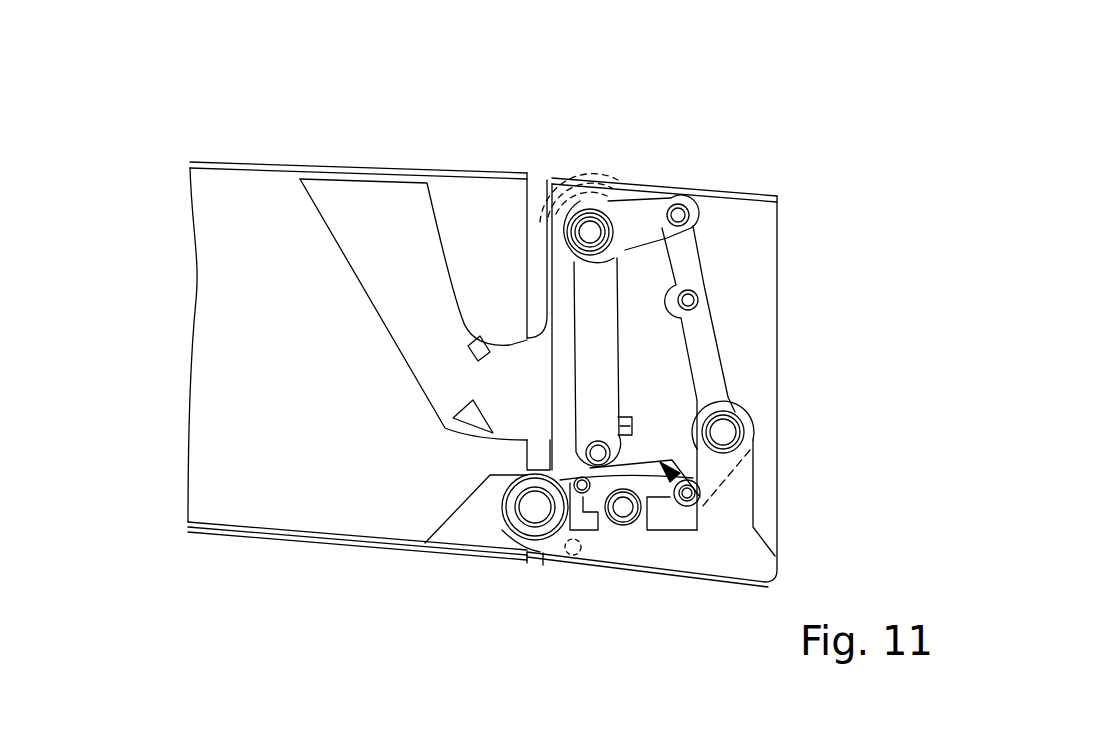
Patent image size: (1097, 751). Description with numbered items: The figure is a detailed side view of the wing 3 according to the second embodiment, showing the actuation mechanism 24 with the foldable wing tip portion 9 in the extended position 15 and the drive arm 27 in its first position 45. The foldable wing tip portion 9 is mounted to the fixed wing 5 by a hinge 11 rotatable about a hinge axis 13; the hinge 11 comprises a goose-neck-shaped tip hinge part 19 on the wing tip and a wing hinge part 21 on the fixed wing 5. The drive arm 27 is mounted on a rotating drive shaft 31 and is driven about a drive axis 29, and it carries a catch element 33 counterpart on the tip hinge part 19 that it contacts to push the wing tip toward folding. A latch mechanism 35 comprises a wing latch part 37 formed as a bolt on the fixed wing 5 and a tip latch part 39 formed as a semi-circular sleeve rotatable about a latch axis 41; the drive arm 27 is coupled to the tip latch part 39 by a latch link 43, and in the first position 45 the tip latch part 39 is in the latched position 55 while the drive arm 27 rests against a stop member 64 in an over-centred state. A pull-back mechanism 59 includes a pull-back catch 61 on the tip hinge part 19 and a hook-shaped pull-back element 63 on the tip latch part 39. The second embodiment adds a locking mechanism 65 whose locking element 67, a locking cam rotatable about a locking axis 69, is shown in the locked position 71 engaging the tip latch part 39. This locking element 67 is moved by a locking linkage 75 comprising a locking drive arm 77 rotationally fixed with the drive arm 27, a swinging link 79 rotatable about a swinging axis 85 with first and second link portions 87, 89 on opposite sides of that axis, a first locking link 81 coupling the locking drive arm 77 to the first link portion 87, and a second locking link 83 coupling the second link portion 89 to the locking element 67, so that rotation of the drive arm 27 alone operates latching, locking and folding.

The wing 3 is at (116, 146).
The extended position 15 is at (213, 101).
The first position 45 is at (838, 241).
The foldable wing tip portion 9 is at (240, 311).
The tip hinge part 19 is at (368, 231).
The catch element 33 is at (481, 342).
The pull-back mechanism 59 is at (433, 421).
The pull-back catch 61 is at (471, 420).
The actuation mechanism 24 is at (541, 252).
The fixed wing 5 is at (741, 241).
The locking mechanism 65 is at (715, 212).
The drive shaft 31 is at (623, 206).
The hinge 11 is at (597, 228).
The hinge axis 13 is at (590, 230).
The drive axis 29 is at (581, 152).
The wing hinge part 21 is at (582, 233).
The drive arm 27 is at (600, 373).
The stop member 64 is at (633, 422).
The locking drive arm 77 is at (648, 210).
The first locking link 81 is at (692, 257).
The first link portion 87 is at (705, 330).
The locking linkage 75 is at (744, 363).
The swinging axis 85 is at (728, 432).
The swinging link 79 is at (720, 388).
The second link portion 89 is at (713, 470).
The pull-back element 63 is at (720, 477).
The tip latch part 39 is at (548, 437).
The latch axis 41 is at (535, 505).
The wing latch part 37 is at (533, 530).
The latched position 55 is at (516, 569).
The latch mechanism 35 is at (538, 572).
The locked position 71 is at (597, 579).
The latch link 43 is at (606, 540).
The locking element 67 is at (590, 495).
The locking axis 69 is at (628, 520).
The second locking link 83 is at (655, 522).